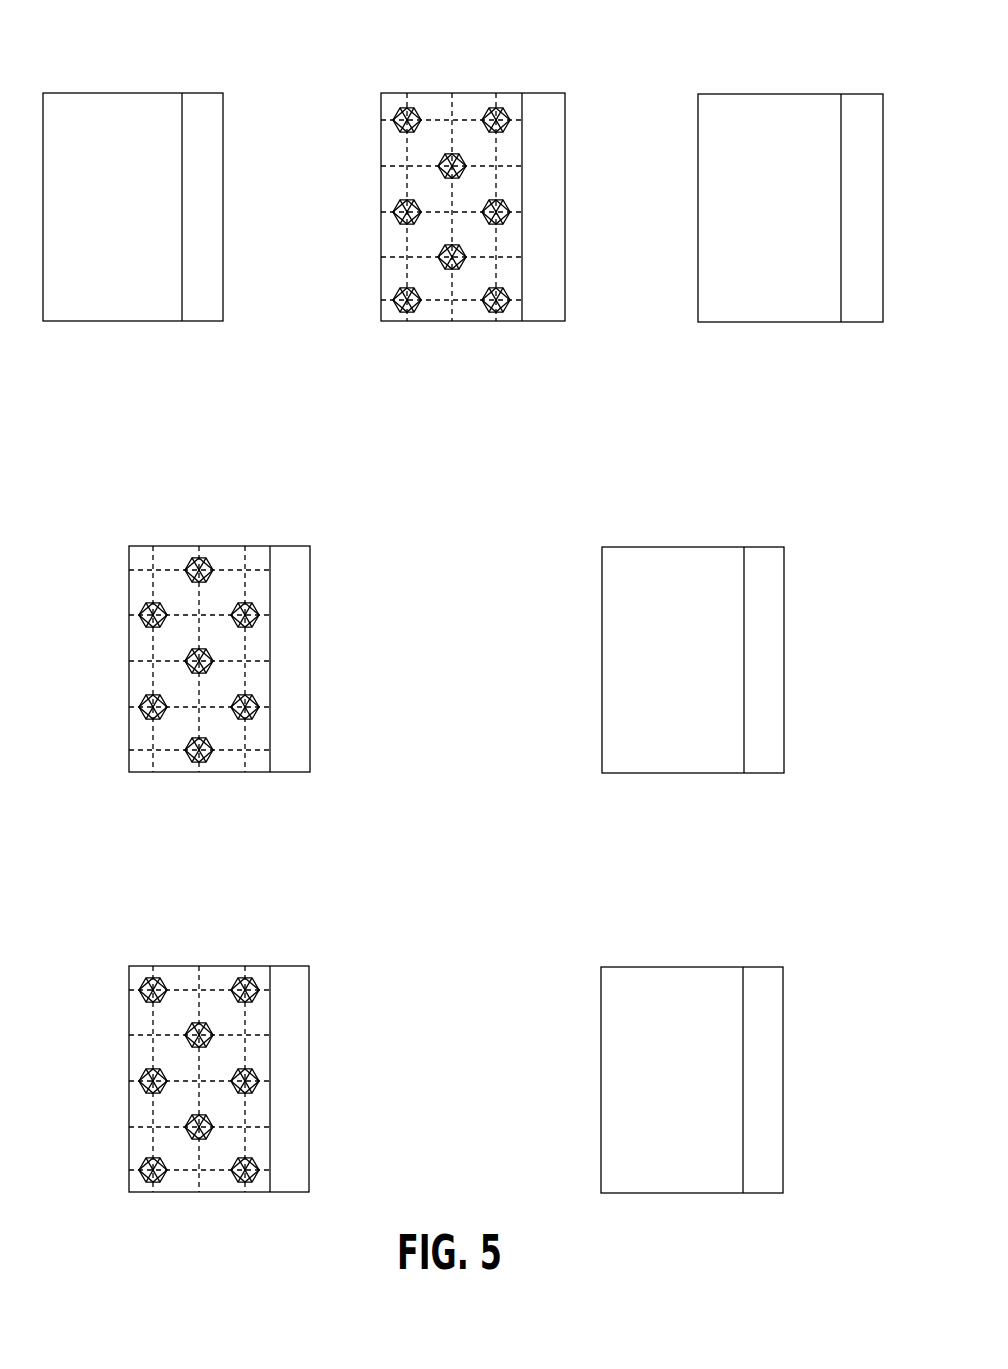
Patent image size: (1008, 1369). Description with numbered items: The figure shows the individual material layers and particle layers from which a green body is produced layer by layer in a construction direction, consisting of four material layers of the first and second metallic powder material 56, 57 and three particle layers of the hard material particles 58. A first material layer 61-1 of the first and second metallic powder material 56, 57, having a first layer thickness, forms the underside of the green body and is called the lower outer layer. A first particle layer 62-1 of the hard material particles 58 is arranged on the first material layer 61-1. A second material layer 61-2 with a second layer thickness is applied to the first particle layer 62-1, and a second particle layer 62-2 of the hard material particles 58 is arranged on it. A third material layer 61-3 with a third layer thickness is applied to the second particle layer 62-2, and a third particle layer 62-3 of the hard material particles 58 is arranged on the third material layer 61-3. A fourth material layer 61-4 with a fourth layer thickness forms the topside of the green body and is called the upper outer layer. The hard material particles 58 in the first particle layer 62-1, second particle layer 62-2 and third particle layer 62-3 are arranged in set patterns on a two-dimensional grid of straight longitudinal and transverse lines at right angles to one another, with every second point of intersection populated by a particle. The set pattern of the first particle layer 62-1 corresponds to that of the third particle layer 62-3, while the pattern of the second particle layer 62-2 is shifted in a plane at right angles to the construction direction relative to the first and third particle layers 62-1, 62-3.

The first metallic powder material 56 is at (438, 672).
The second metallic powder material 57 is at (528, 672).
The hard material particles 58 is at (393, 213).
The first material layer 61-1 is at (133, 160).
The second material layer 61-2 is at (790, 161).
The third material layer 61-3 is at (693, 610).
The fourth material layer 61-4 is at (692, 1030).
The first particle layer 62-1 is at (473, 160).
The second particle layer 62-2 is at (219, 609).
The third particle layer 62-3 is at (219, 1030).